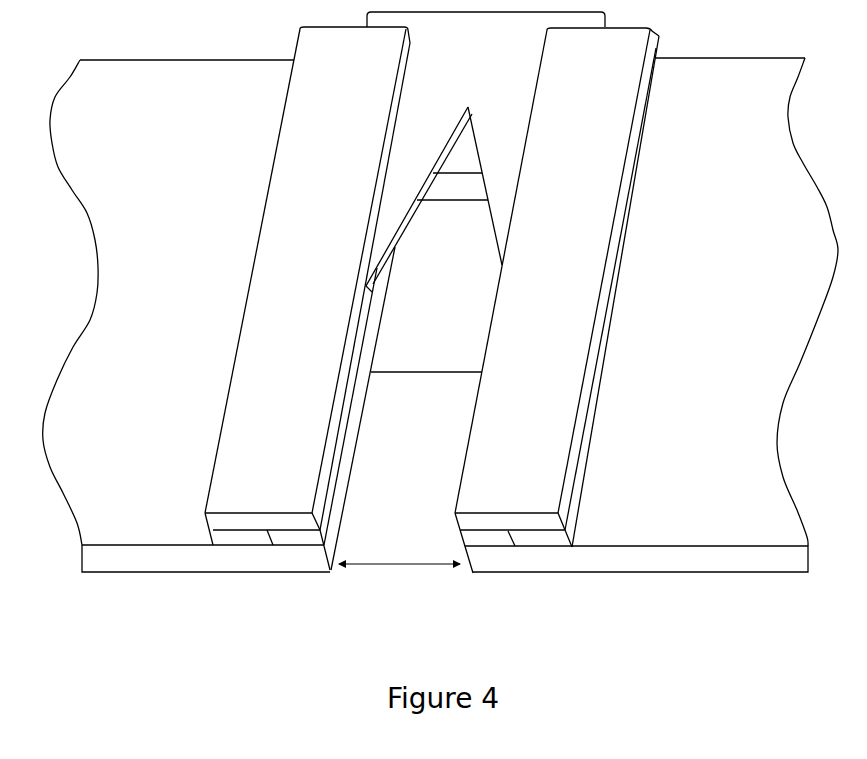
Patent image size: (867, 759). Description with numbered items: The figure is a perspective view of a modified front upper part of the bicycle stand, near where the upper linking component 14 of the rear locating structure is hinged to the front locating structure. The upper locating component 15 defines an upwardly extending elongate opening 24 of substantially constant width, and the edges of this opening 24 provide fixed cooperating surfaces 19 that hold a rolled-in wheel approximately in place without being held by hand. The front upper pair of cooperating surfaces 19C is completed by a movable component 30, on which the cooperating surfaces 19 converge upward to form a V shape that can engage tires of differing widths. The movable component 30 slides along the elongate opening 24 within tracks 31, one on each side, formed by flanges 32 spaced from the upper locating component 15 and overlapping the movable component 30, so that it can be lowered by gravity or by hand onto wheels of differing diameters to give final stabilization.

The upper linking component 14 is at (412, 348).
The upper locating component 15 is at (143, 255).
The cooperating locating surfaces 19 is at (490, 282).
The front upper pair of cooperating surfaces 19C is at (432, 146).
The elongate opening 24 is at (392, 580).
The movable component 30 is at (512, 118).
The tracks 31 is at (289, 540).
The flanges 32 is at (325, 175).